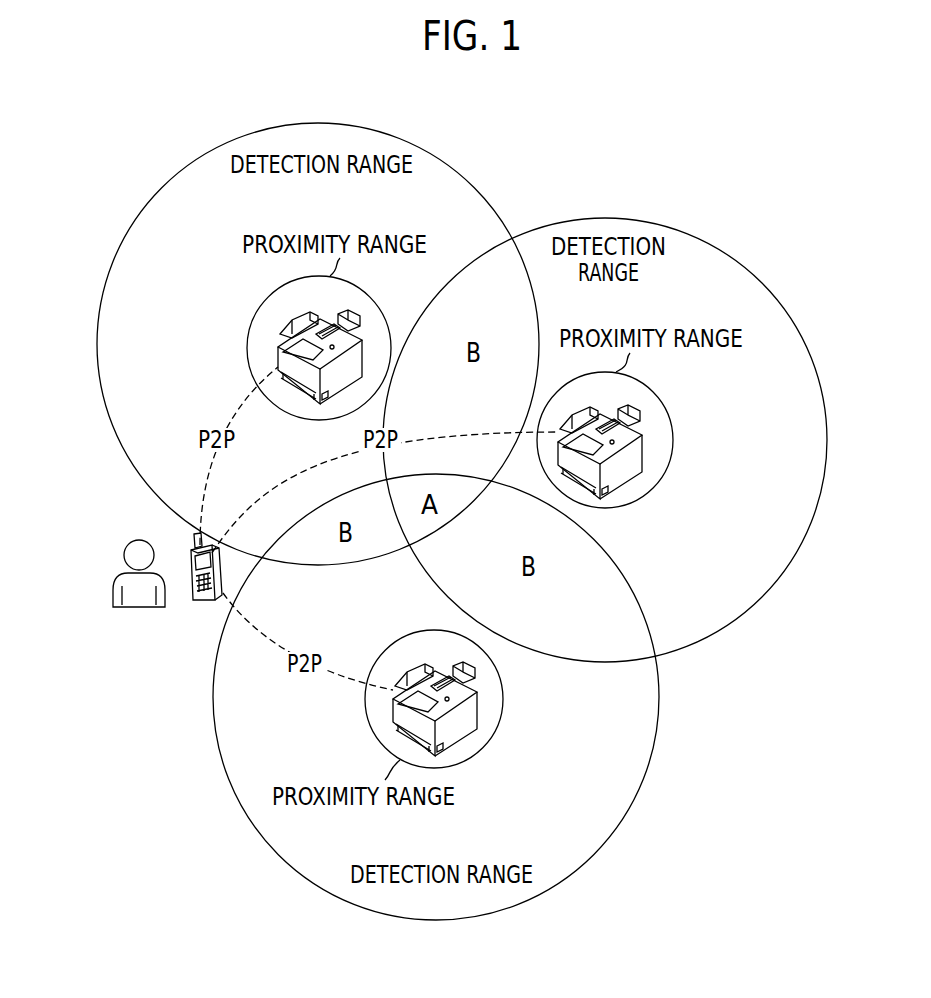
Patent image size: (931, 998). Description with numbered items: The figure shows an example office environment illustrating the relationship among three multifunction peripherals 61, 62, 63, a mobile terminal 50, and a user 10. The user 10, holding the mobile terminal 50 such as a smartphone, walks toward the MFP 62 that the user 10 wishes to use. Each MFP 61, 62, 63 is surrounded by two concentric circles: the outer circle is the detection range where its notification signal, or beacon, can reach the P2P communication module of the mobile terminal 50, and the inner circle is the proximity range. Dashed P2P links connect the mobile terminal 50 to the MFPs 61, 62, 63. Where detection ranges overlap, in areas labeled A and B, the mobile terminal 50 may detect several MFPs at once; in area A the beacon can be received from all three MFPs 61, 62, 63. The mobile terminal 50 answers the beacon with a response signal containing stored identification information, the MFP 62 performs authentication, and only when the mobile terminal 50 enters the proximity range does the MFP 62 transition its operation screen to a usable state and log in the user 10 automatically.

The user 10 is at (120, 565).
The mobile terminal 50 is at (197, 600).
The multifunction peripheral 61 is at (290, 323).
The multifunction peripheral 62 is at (642, 424).
The multifunction peripheral 63 is at (460, 742).